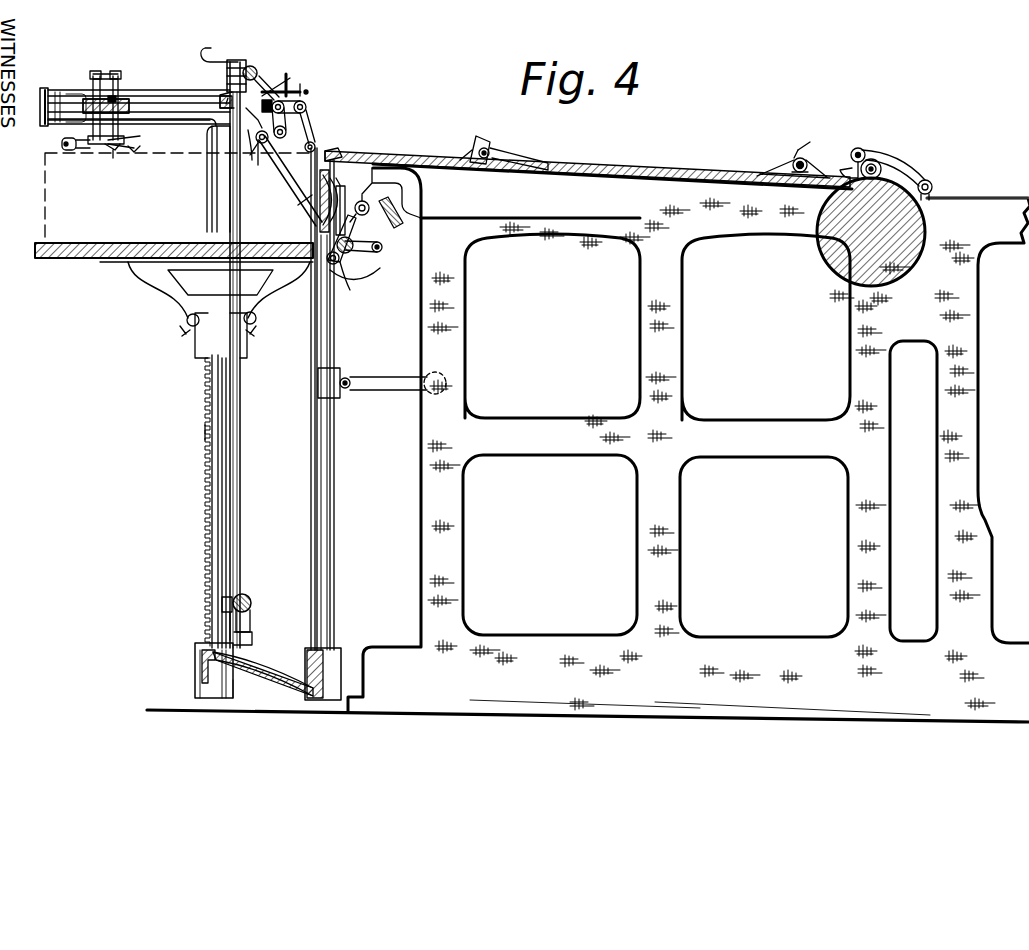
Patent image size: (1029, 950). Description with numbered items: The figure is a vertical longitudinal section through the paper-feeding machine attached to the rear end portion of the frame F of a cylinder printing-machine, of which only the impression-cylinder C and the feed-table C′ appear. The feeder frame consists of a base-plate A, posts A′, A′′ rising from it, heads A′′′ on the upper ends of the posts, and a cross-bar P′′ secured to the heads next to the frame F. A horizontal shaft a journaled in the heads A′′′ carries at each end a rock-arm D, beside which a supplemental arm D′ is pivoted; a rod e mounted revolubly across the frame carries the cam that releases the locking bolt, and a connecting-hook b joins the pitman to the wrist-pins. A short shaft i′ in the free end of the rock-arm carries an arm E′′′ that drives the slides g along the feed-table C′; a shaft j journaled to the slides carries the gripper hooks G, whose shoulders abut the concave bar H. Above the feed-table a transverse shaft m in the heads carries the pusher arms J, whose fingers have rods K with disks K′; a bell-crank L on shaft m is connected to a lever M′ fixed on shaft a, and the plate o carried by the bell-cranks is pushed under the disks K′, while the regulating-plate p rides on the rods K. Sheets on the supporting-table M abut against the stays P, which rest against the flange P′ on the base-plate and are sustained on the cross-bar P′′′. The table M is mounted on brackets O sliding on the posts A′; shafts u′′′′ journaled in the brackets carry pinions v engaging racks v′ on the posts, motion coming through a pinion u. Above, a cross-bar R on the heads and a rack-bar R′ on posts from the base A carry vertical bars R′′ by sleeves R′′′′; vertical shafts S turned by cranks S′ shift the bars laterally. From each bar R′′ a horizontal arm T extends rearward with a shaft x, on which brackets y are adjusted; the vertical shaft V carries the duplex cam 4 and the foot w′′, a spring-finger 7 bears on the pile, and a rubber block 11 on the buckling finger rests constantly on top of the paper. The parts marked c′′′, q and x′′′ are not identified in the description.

The frame of cylinder printing-machine F is at (588, 445).
The feed-table C′ is at (620, 170).
The impression-cylinder C is at (871, 232).
The hook G is at (842, 172).
The shaft j is at (800, 156).
The slide g is at (787, 168).
The concave bar H is at (801, 150).
The short shaft i′ is at (480, 143).
The arm E′′′ is at (528, 160).
The rock-arm D is at (392, 230).
The post A′′ is at (311, 496).
The stay P is at (311, 442).
The vertical flange P′ is at (305, 680).
The cross-bar P′′ is at (348, 192).
The cross-bar P′′′ is at (334, 192).
The pivot c′′′ is at (363, 201).
The rock-shaft a is at (352, 272).
The rod e is at (378, 253).
The lever M′ is at (348, 292).
The bell-crank L is at (258, 158).
The supplemental arm D′ is at (298, 207).
The head A′′′ is at (266, 180).
The transverse shaft m is at (256, 145).
The rod K is at (310, 110).
The arm J is at (314, 135).
The disk K′ is at (296, 86).
The metallic plate o is at (311, 92).
The regulating-plate p is at (282, 84).
The cross-bar R is at (256, 68).
The vertical bar R′′ is at (241, 64).
The crank S′ is at (219, 52).
The sleeve R′′′′ is at (220, 96).
The block q is at (220, 90).
The vertical shaft S is at (232, 420).
The bracket x′′′ is at (210, 158).
The horizontal arm T is at (160, 100).
The shaft x is at (175, 112).
The pinion u is at (90, 80).
The vertical shaft V is at (122, 98).
The bracket y is at (124, 90).
The duplex cam 4 is at (115, 135).
The spring-finger 7 is at (139, 148).
The rubber block 11 is at (72, 150).
The foot w′′ is at (114, 152).
The paper-supporting table M is at (175, 207).
The bracket O is at (160, 292).
The pinion v is at (186, 320).
The shaft u′′′′ is at (184, 334).
The post A′ is at (205, 493).
The rack v′ is at (203, 432).
The base-plate A is at (262, 652).
The rack-bar R′ is at (252, 605).
The connecting-hook b is at (382, 383).